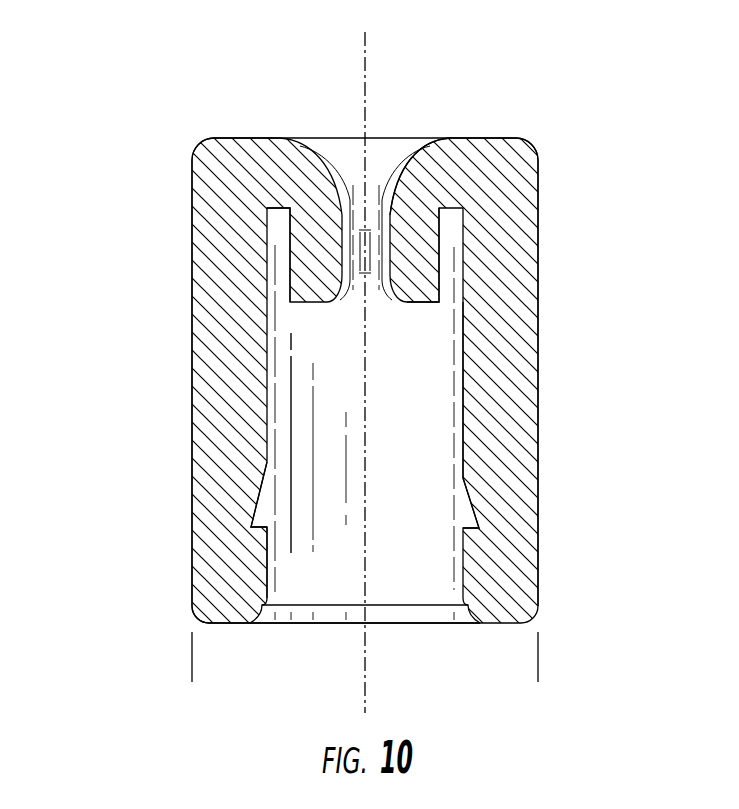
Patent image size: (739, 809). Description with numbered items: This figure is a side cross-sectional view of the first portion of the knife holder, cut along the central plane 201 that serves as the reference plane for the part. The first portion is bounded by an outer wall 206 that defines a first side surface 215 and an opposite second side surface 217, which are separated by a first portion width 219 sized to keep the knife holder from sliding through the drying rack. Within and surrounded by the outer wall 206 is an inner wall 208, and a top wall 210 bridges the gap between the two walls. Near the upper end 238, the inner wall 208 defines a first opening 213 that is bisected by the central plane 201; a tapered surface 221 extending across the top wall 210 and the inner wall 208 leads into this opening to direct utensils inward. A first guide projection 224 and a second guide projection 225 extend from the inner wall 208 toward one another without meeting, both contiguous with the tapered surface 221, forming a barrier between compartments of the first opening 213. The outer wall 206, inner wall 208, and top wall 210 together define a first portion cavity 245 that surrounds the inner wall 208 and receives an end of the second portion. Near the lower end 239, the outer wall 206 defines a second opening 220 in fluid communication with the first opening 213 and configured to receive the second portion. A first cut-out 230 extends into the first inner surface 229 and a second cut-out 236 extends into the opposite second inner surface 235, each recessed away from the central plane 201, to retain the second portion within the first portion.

The central plane 201 is at (369, 58).
The outer wall 206 is at (207, 378).
The inner wall 208 is at (420, 230).
The top wall 210 is at (503, 138).
The first opening 213 is at (362, 182).
The first side surface 215 is at (192, 505).
The second side surface 217 is at (538, 365).
The first portion width 219 is at (537, 659).
The second opening 220 is at (445, 627).
The tapered surface 221 is at (407, 145).
The first guide projection 224 is at (345, 177).
The second guide projection 225 is at (386, 186).
The first inner surface 229 is at (267, 553).
The first cut-out 230 is at (254, 497).
The second inner surface 235 is at (462, 445).
The second cut-out 236 is at (477, 507).
The upper end 238 is at (156, 148).
The lower end 239 is at (166, 610).
The first portion cavity 245 is at (283, 232).